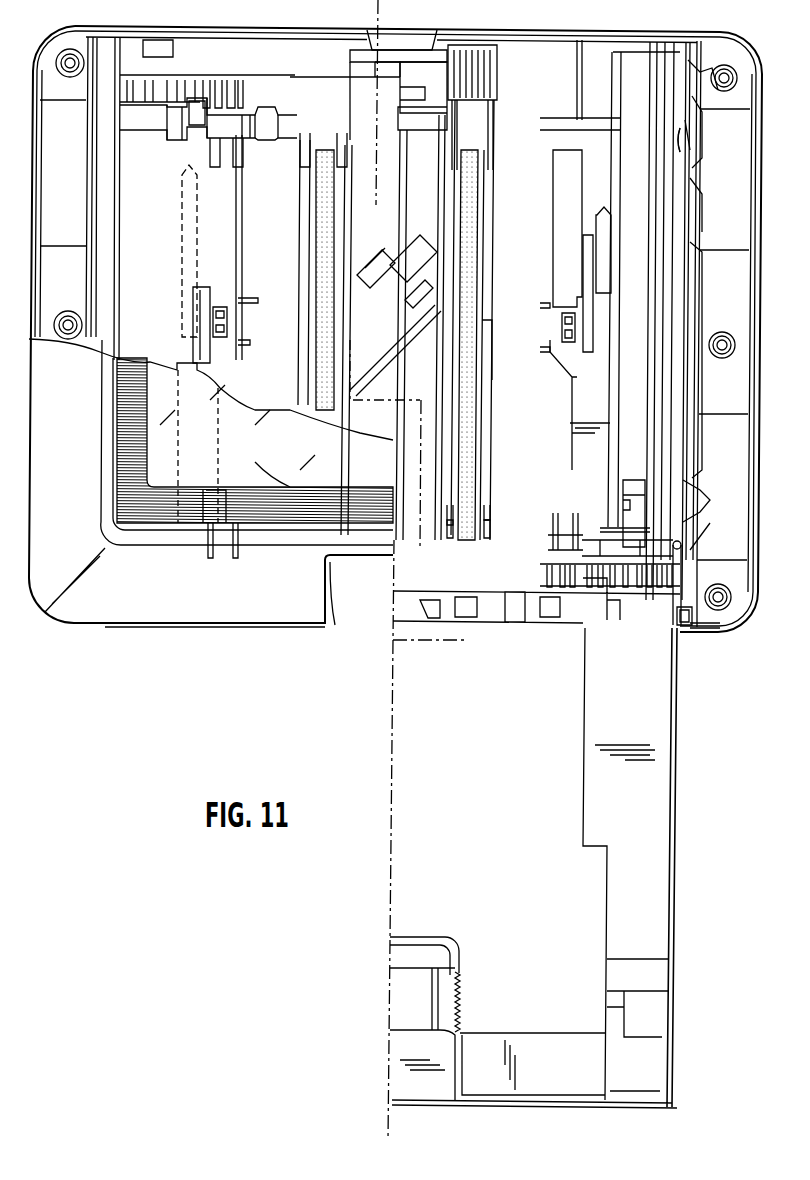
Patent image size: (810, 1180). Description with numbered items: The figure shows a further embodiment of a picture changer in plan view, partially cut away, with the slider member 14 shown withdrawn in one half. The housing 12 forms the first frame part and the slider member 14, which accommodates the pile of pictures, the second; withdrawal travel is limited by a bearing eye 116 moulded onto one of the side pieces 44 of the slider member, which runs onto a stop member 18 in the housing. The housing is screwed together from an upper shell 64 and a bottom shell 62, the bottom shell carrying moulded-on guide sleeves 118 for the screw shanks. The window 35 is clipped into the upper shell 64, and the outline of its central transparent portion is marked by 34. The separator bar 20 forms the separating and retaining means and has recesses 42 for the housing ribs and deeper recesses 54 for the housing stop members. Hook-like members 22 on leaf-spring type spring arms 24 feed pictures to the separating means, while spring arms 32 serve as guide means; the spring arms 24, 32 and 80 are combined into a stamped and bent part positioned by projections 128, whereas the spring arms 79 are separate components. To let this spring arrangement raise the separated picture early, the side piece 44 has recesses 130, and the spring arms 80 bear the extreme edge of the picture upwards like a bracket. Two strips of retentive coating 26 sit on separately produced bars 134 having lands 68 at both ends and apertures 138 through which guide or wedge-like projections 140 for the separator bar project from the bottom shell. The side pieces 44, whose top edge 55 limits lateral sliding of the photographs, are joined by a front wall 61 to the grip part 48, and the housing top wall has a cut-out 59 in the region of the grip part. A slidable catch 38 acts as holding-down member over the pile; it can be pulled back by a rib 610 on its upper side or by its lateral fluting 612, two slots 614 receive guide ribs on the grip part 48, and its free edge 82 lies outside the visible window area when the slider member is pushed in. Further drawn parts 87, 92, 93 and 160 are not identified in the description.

The housing 12 is at (340, 6).
The slider member 14 is at (685, 776).
The stop member 18 is at (684, 628).
The separator bar 20 is at (270, 130).
The hook-like members 22 is at (230, 478).
The spring arms 24 is at (573, 390).
The retentive coating 26 is at (480, 255).
The spring arms 32 is at (240, 225).
The outline of central transparent portion of the window 34 is at (269, 463).
The window 35 is at (249, 427).
The slidable catch 38 is at (397, 988).
The recesses 42 is at (262, 125).
The side pieces 44 is at (655, 733).
The grip part 48 is at (398, 1090).
The recesses 54 is at (193, 130).
The top edge 55 is at (670, 853).
The cut-out 59 is at (342, 592).
The front wall 61 is at (528, 1108).
The bottom shell 62 is at (742, 630).
The upper shell 64 is at (75, 620).
The lands 68 is at (495, 140).
The spring arms 79 is at (628, 505).
The spring arms 80 is at (182, 250).
The free edge 82 is at (413, 935).
The button 87 is at (418, 33).
The compartment 92 is at (658, 975).
The hinge block 93 is at (395, 130).
The bearing eye 116 is at (694, 630).
The guide sleeves 118 is at (722, 352).
The projections 128 is at (560, 294).
The recesses 130 is at (640, 547).
The bar 134 is at (488, 383).
The apertures 138 is at (493, 500).
The guide or wedge-like projections 140 is at (492, 522).
The contact 160 is at (677, 618).
The rib 610 is at (425, 963).
The lateral fluting 612 is at (462, 980).
The slots 614 is at (435, 1015).